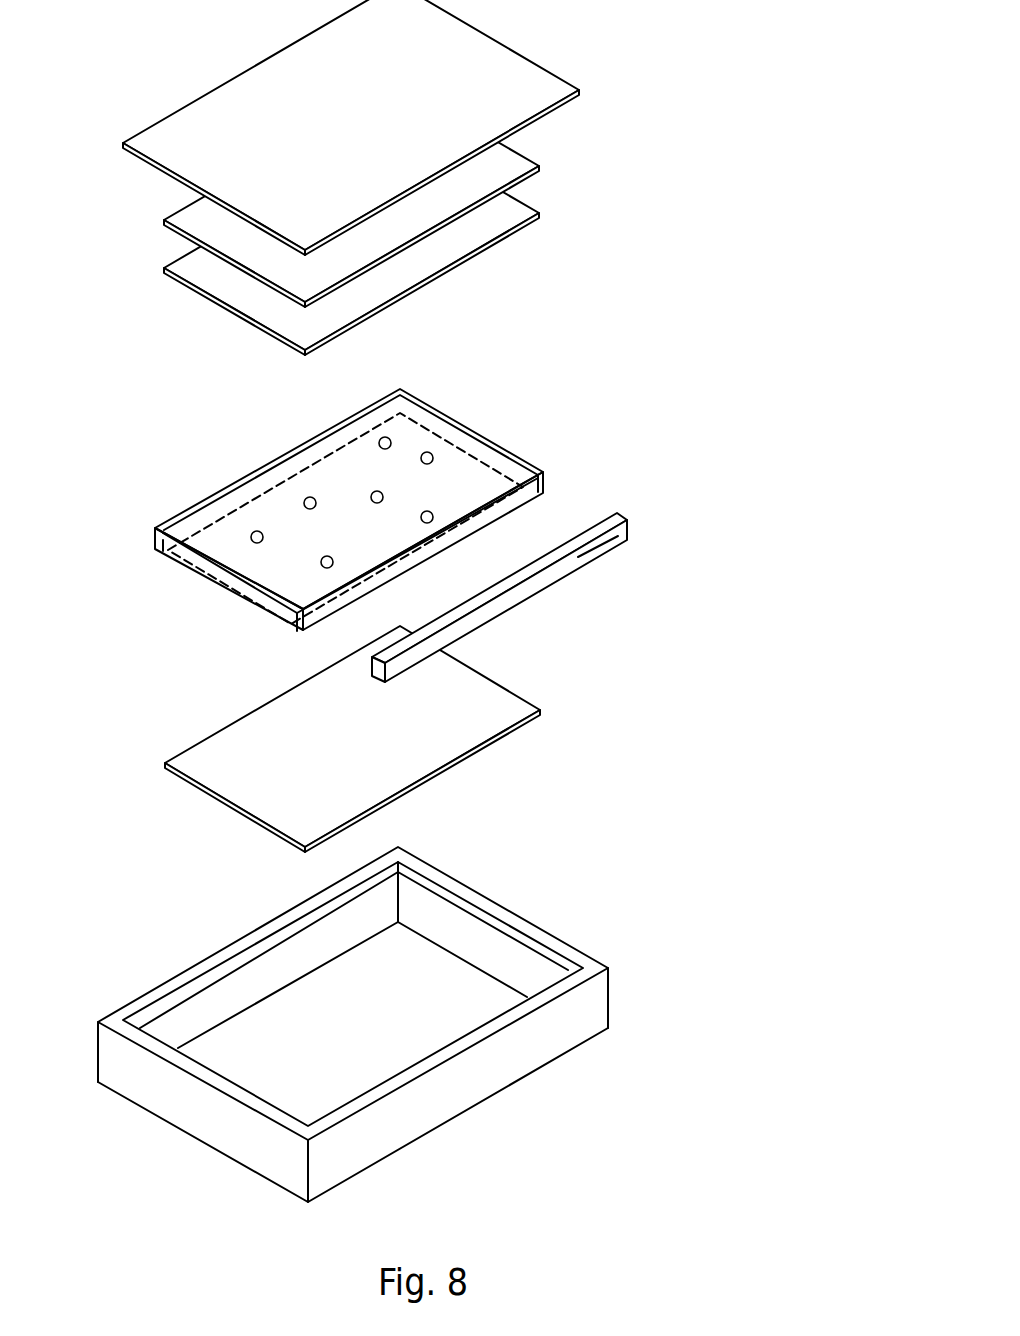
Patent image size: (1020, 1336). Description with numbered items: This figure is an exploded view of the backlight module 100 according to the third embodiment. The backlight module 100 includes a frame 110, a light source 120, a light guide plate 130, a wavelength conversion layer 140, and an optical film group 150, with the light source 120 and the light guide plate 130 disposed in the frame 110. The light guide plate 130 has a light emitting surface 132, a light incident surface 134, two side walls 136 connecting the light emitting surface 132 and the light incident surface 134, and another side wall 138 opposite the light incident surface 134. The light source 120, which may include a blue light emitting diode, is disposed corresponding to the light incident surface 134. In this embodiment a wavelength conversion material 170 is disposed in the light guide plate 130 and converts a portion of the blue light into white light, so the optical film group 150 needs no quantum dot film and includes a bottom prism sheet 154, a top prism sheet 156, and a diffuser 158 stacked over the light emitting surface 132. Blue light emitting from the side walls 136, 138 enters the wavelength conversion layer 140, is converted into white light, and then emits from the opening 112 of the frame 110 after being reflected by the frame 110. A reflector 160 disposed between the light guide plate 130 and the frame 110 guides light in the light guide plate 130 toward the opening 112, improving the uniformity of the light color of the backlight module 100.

The backlight module 100 is at (90, 22).
The frame 110 is at (443, 1024).
The opening 112 is at (557, 954).
The light source 120 is at (580, 580).
The light guide plate 130 is at (471, 453).
The light emitting surface 132 is at (469, 446).
The light incident surface 134 is at (412, 557).
The side wall 136 is at (264, 577).
The side wall 138 is at (389, 456).
The wavelength conversion layer 140 is at (294, 478).
The optical film group 150 is at (455, 177).
The bottom prism sheet 154 is at (530, 212).
The top prism sheet 156 is at (530, 158).
The diffuser 158 is at (713, 212).
The reflector 160 is at (440, 725).
The wavelength conversion material 170 is at (530, 567).